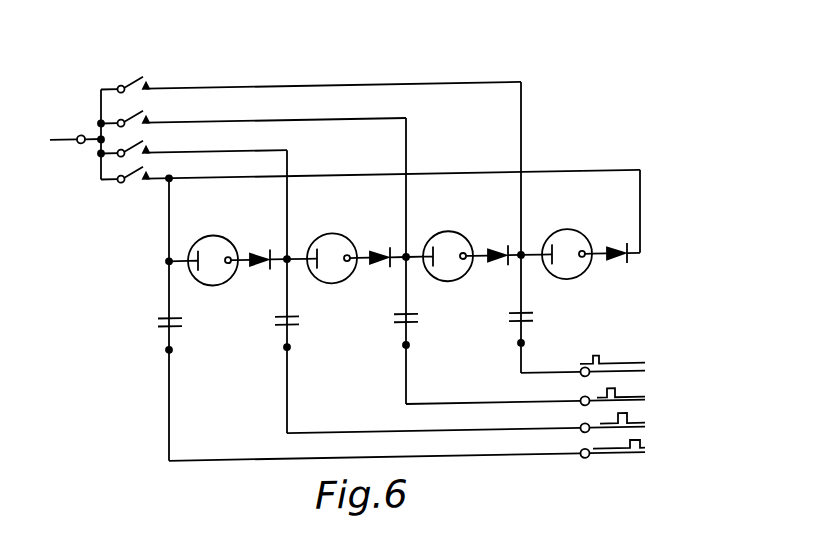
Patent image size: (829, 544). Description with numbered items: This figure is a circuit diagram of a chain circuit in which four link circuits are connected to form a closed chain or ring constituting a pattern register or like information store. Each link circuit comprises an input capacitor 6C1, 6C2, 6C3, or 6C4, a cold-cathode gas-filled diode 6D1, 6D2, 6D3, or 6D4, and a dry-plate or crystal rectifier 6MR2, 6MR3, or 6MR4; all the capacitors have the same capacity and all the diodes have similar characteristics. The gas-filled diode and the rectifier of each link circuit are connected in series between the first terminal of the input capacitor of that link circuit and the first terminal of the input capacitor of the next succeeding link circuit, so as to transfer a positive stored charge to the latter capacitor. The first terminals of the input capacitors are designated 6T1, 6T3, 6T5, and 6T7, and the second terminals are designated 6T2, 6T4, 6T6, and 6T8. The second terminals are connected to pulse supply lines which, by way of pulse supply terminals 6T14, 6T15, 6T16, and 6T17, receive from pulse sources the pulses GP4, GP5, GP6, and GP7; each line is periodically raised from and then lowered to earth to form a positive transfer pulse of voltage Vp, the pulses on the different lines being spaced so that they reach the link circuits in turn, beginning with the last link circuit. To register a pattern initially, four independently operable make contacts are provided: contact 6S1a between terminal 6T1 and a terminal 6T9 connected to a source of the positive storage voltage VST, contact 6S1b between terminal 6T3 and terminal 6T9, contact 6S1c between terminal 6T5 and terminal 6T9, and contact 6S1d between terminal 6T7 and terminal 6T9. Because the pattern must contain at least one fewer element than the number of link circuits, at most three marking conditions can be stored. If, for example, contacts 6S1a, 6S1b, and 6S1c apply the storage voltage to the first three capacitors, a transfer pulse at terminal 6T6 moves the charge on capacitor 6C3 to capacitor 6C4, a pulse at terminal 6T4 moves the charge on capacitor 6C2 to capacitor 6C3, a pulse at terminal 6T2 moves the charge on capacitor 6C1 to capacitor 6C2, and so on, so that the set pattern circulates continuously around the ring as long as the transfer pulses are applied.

The make contact 6S1a is at (370, 166).
The make contact 6S1b is at (194, 142).
The make contact 6S1c is at (253, 112).
The make contact 6S1d is at (311, 77).
The terminal 6T9 is at (79, 139).
The positive storage voltage VST is at (64, 122).
The first terminal of input capacitor 6T1 is at (167, 259).
The second terminal of input capacitor 6T2 is at (166, 348).
The first terminal of input capacitor 6T3 is at (285, 261).
The second terminal of input capacitor 6T4 is at (284, 348).
The first terminal of input capacitor 6T5 is at (404, 262).
The second terminal of input capacitor 6T6 is at (404, 348).
The first terminal of input capacitor 6T7 is at (519, 263).
The second terminal of input capacitor 6T8 is at (519, 348).
The cold-cathode gas-filled diode 6D1 is at (213, 248).
The cold-cathode gas-filled diode 6D2 is at (322, 246).
The cold-cathode gas-filled diode 6D3 is at (439, 245).
The cold-cathode gas-filled diode 6D4 is at (556, 243).
The dry-plate or crystal rectifier 6MR2 is at (381, 246).
The dry-plate or crystal rectifier 6MR3 is at (380, 244).
The dry-plate or crystal rectifier 6MR4 is at (615, 242).
The input capacitor 6C1 is at (191, 323).
The input capacitor 6C2 is at (309, 323).
The input capacitor 6C3 is at (427, 320).
The input capacitor 6C4 is at (542, 317).
The pulse supply terminal 6T14 is at (580, 368).
The pulse supply terminal 6T15 is at (584, 400).
The pulse supply terminal 6T16 is at (584, 426).
The pulse supply terminal 6T17 is at (584, 452).
The gating pulse output GP4 is at (528, 380).
The gating pulse output GP5 is at (533, 409).
The gating pulse output GP6 is at (532, 437).
The gating pulse output GP7 is at (527, 458).
The transfer pulse voltage Vp is at (600, 358).